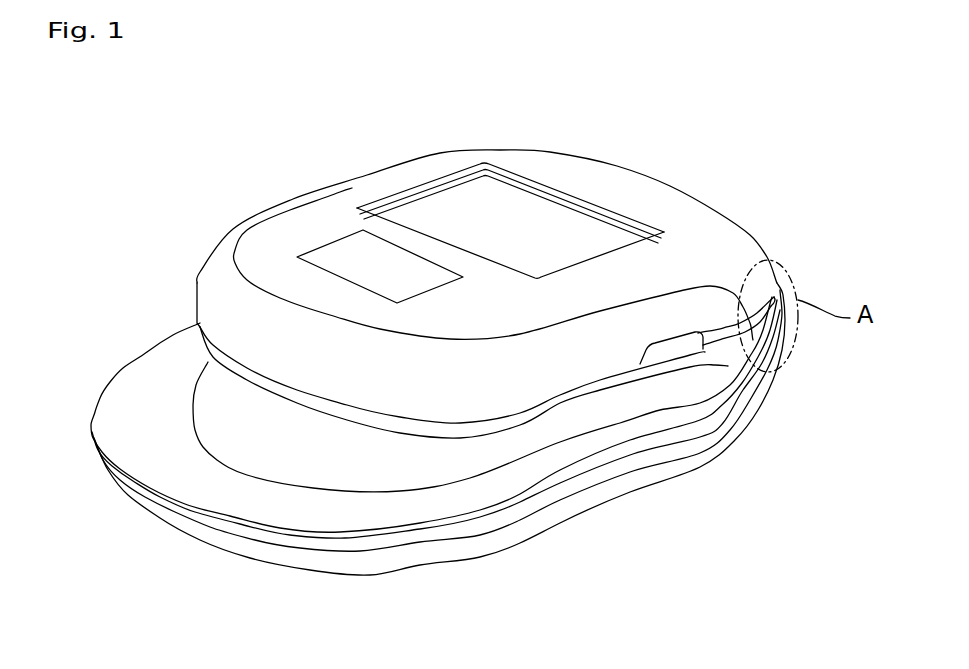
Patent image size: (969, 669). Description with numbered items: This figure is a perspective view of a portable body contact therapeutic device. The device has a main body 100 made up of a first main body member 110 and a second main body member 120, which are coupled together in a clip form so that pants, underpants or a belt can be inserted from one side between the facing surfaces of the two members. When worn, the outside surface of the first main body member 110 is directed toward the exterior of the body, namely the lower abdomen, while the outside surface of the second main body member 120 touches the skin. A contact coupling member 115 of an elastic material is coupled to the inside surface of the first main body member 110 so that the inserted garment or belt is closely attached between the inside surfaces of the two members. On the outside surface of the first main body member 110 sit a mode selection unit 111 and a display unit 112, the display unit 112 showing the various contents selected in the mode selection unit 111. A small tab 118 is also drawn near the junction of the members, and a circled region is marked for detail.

The main body 100 is at (700, 130).
The first main body member 110 is at (690, 237).
The mode selection unit 111 is at (337, 263).
The display unit 112 is at (487, 213).
The contact coupling member 115 is at (560, 413).
The latch tab 118 is at (668, 355).
The second main body member 120 is at (400, 507).